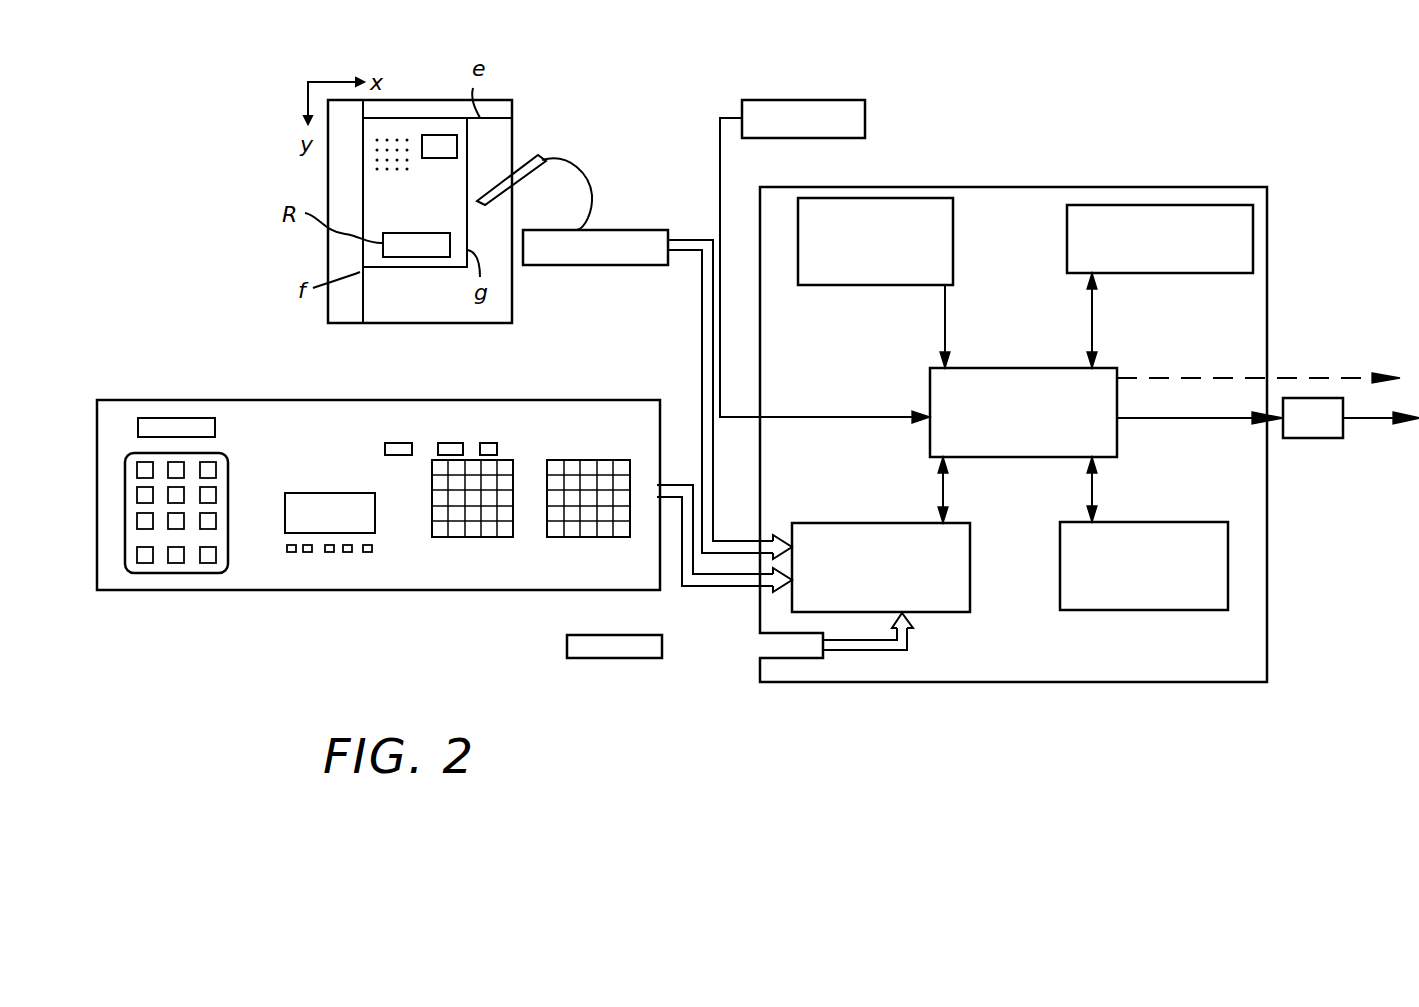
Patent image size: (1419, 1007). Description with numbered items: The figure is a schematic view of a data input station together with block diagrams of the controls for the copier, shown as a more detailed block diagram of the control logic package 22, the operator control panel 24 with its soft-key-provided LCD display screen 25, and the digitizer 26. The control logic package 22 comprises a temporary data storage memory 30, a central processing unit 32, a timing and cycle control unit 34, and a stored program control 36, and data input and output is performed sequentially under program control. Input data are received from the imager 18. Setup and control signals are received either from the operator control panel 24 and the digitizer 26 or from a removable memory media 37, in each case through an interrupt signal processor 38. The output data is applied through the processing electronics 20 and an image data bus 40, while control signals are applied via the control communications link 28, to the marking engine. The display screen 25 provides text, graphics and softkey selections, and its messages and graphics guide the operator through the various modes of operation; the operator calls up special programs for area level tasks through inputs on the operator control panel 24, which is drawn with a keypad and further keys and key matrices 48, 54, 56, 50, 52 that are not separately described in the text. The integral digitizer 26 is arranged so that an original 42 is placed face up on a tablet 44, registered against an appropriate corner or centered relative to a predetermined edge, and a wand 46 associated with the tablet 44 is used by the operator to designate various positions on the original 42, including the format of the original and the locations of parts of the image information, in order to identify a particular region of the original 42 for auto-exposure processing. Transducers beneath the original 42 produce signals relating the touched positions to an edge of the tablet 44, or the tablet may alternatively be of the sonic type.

The imager 18 is at (830, 100).
The processing electronics 20 is at (1318, 438).
The control logic package 22 is at (1022, 187).
The operator control panel 24 is at (253, 410).
The soft-key-provided LCD display screen 25 is at (318, 493).
The digitizer 26 is at (633, 230).
The control communications link 28 is at (1308, 373).
The temporary data storage memory 30 is at (1160, 205).
The central processing unit 32 is at (930, 388).
The timing and cycle control unit 34 is at (1153, 522).
The stored program control 36 is at (932, 198).
The removable memory media 37 is at (650, 658).
The interrupt signal processor 38 is at (823, 522).
The image data bus 40 is at (1363, 423).
The original 42 is at (399, 207).
The tablet 44 is at (536, 112).
The wand 46 is at (531, 163).
The button 48 is at (403, 443).
The key matrix 50 is at (596, 434).
The key matrix 52 is at (472, 558).
The button 54 is at (457, 443).
The button 56 is at (498, 443).